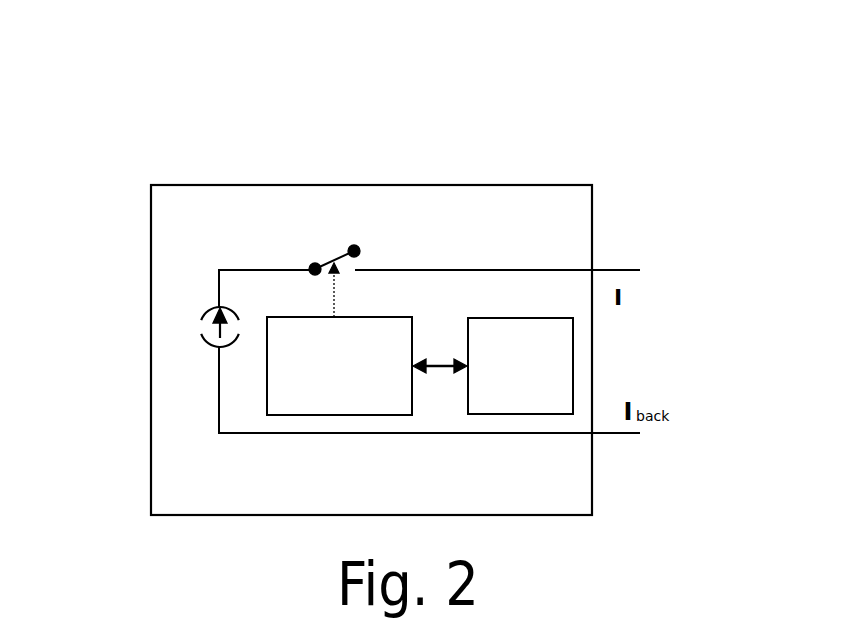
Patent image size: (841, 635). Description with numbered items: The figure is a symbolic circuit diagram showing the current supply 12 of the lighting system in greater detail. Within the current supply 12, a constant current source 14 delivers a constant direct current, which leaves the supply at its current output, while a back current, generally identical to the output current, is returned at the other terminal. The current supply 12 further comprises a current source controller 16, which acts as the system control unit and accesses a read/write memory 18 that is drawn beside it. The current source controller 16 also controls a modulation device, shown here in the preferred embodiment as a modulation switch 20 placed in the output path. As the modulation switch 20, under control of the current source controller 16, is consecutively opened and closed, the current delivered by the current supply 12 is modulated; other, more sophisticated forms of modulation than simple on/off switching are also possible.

The current supply 12 is at (512, 185).
The constant current source 14 is at (199, 306).
The current source controller 16 is at (339, 366).
The read/write memory 18 is at (520, 366).
The modulation switch 20 is at (335, 262).